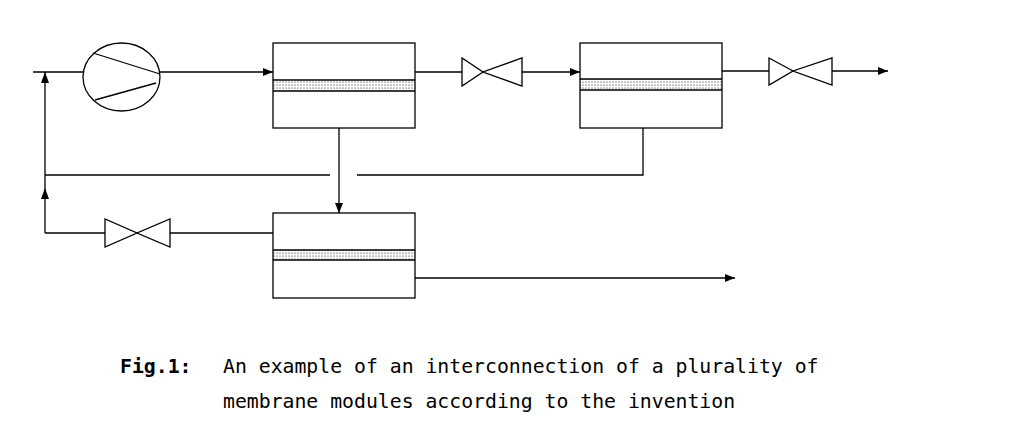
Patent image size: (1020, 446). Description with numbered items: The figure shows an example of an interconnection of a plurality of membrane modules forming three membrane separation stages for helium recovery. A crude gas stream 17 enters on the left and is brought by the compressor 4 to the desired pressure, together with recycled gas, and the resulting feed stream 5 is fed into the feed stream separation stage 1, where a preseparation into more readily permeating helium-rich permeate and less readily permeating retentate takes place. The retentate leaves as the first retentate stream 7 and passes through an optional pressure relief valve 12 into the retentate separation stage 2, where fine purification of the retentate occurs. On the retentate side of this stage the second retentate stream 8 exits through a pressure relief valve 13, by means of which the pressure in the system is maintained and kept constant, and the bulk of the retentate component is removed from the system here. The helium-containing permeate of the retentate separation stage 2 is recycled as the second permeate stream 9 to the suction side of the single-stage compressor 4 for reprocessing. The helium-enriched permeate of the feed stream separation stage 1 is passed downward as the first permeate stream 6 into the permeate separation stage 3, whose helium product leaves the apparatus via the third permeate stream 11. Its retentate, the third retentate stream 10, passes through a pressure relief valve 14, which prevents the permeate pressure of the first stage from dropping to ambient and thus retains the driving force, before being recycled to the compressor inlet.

The feed stream separation stage 1 is at (344, 71).
The retentate separation stage 2 is at (651, 76).
The permeate separation stage 3 is at (344, 269).
The compressor 4 is at (121, 67).
The feed stream 5 is at (216, 62).
The first permeate stream 6 is at (350, 170).
The first retentate stream 7 is at (497, 63).
The second retentate stream 8 is at (860, 59).
The second permeate stream 9 is at (342, 163).
The third retentate stream 10 is at (221, 222).
The third permeate stream 11 is at (575, 264).
The pressure relief valve 12 is at (492, 65).
The pressure relief valve 13 is at (777, 64).
The pressure relief valve 14 is at (107, 226).
The crude gas stream 17 is at (58, 136).